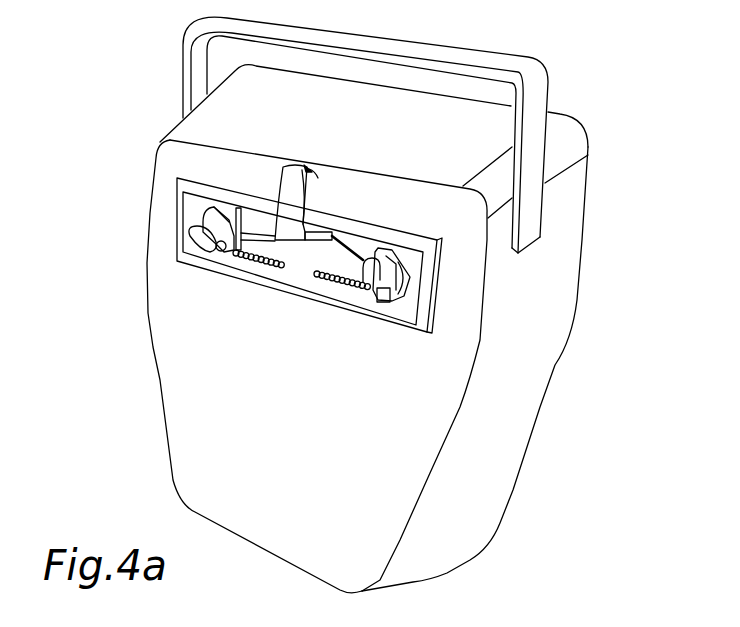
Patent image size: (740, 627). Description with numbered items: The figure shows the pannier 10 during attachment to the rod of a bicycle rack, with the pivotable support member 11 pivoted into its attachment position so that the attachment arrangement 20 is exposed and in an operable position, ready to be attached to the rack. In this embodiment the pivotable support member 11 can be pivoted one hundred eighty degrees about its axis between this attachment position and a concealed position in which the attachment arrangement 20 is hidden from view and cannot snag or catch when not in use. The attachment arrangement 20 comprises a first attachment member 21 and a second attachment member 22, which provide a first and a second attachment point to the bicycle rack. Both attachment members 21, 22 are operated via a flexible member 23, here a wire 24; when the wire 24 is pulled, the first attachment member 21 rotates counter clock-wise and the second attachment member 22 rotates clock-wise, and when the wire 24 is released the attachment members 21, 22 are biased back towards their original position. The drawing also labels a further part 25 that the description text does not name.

The pannier 10 is at (523, 367).
The pivotable support member 11 is at (300, 253).
The attachment arrangement 20 is at (358, 284).
The first attachment member 21 is at (193, 242).
The second attachment member 22 is at (385, 300).
The flexible member 23 is at (252, 237).
The wire 24 is at (296, 202).
The pivot 25 is at (220, 251).